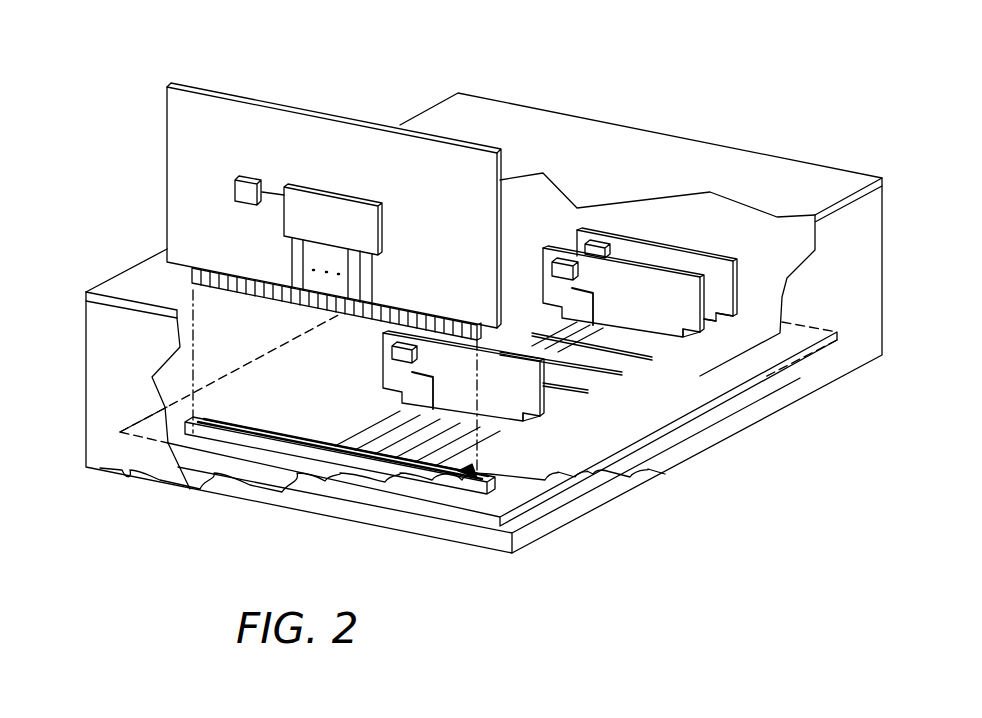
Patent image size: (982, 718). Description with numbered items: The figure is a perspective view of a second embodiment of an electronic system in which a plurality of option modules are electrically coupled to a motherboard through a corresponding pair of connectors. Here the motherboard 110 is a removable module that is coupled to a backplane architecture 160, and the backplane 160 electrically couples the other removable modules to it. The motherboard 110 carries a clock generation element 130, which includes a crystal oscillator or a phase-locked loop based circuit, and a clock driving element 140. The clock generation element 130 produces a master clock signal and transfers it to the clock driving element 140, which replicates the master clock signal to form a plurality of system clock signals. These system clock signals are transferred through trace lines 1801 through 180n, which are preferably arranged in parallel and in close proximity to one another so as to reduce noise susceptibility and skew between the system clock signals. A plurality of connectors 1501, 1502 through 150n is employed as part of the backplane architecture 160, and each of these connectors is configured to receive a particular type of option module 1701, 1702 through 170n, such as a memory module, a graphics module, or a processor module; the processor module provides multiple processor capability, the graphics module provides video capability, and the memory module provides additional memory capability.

The motherboard 110 is at (205, 113).
The clock generation element 130 is at (243, 190).
The clock driving element 140 is at (386, 235).
The connector 1501 is at (740, 340).
The connector 1502 is at (687, 338).
The connector 150n is at (525, 425).
The backplane architecture 160 is at (592, 437).
The option module 1701 is at (710, 275).
The option module 1702 is at (557, 295).
The option module 170n is at (535, 418).
The trace line 1801 is at (378, 385).
The trace line 180n is at (417, 438).